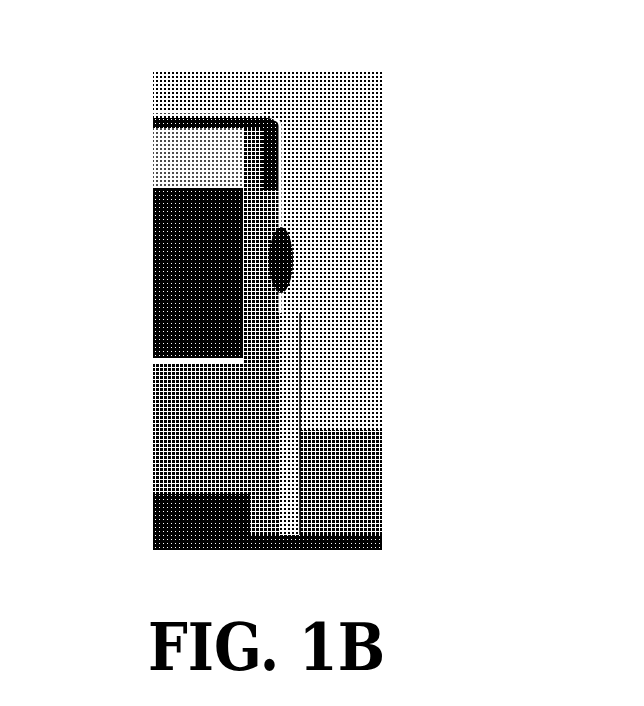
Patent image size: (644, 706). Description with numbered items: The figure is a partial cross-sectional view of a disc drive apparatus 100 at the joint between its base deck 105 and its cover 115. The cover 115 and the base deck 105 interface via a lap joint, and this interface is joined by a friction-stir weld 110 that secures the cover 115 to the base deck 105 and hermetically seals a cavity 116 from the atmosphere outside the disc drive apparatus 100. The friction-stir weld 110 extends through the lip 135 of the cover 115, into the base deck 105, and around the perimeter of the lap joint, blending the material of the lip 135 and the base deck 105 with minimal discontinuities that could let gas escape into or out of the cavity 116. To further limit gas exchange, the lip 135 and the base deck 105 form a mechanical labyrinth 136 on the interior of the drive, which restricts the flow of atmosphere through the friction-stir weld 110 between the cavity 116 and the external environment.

The disc drive apparatus 100 is at (530, 76).
The base deck 105 is at (263, 387).
The friction-stir weld 110 is at (292, 260).
The cover 115 is at (178, 140).
The cavity 116 is at (187, 272).
The lip 135 is at (282, 158).
The mechanical labyrinth 136 is at (283, 205).